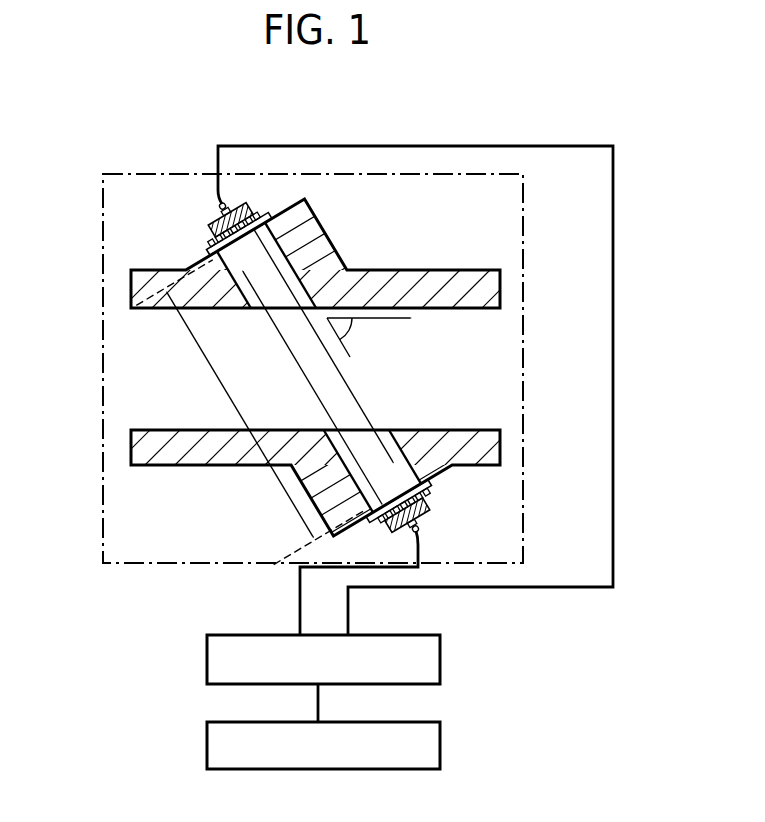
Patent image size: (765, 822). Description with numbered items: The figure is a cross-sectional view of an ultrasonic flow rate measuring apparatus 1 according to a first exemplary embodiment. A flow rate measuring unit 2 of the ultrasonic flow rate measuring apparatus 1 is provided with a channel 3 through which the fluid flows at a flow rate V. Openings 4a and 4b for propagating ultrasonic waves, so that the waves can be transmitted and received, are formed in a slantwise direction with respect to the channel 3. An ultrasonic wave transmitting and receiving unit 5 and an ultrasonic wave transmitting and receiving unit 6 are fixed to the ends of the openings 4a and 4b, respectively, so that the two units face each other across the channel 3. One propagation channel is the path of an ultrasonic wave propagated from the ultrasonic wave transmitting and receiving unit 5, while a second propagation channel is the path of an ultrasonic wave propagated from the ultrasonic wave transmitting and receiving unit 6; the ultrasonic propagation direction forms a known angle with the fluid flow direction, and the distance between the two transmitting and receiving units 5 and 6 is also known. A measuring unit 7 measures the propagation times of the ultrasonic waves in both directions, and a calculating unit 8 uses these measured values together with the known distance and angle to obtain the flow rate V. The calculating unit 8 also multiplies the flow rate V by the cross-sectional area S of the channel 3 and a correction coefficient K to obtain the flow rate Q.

The ultrasonic flow rate measuring apparatus 1 is at (60, 88).
The flow rate measuring unit 2 is at (102, 227).
The channel 3 is at (422, 289).
The opening 4a is at (393, 443).
The opening 4b is at (305, 298).
The ultrasonic wave transmitting and receiving unit 5 is at (432, 500).
The ultrasonic wave transmitting and receiving unit 6 is at (222, 232).
The measuring unit 7 is at (440, 648).
The calculating unit 8 is at (440, 738).